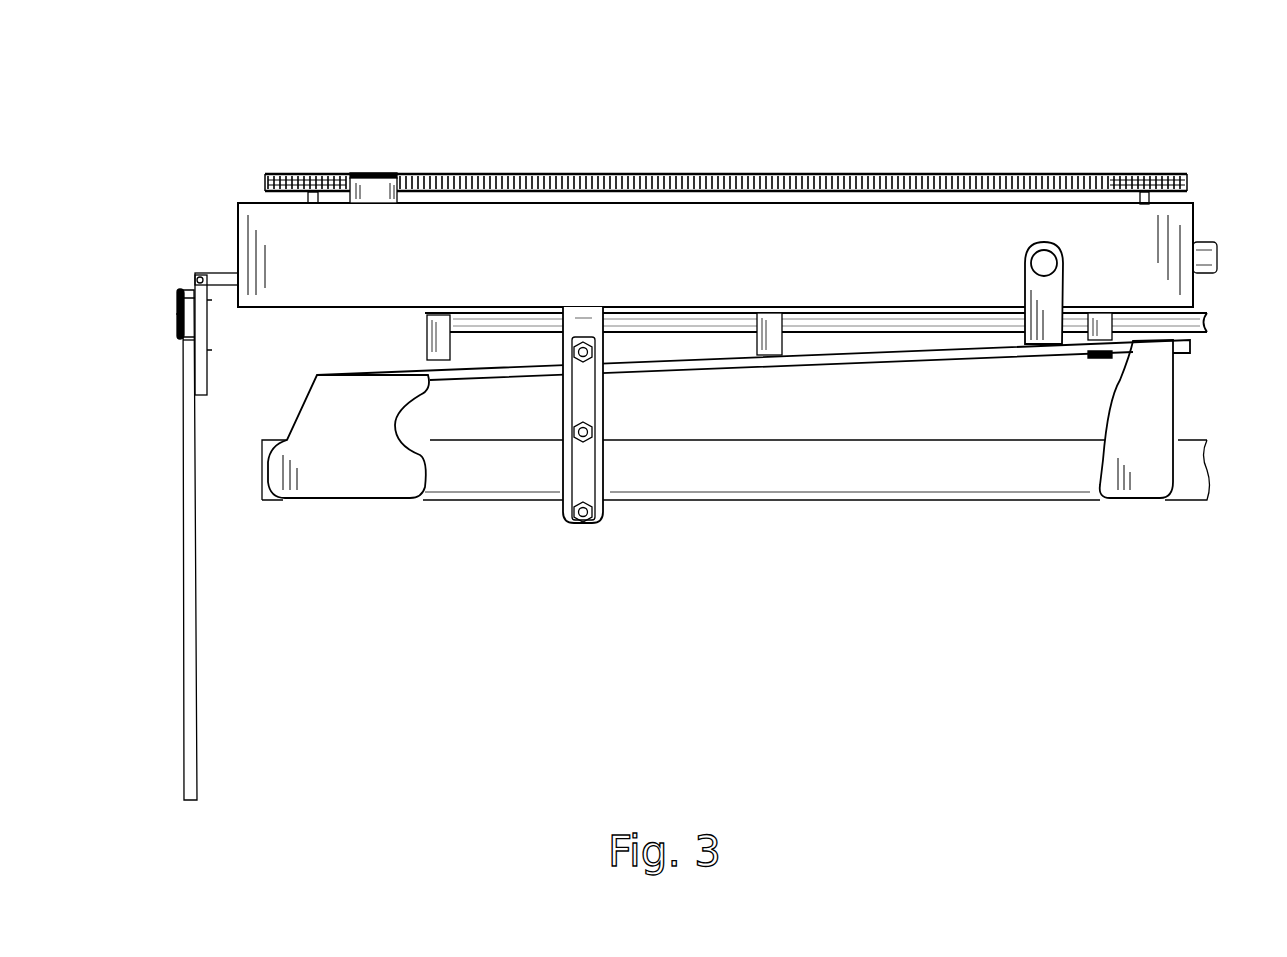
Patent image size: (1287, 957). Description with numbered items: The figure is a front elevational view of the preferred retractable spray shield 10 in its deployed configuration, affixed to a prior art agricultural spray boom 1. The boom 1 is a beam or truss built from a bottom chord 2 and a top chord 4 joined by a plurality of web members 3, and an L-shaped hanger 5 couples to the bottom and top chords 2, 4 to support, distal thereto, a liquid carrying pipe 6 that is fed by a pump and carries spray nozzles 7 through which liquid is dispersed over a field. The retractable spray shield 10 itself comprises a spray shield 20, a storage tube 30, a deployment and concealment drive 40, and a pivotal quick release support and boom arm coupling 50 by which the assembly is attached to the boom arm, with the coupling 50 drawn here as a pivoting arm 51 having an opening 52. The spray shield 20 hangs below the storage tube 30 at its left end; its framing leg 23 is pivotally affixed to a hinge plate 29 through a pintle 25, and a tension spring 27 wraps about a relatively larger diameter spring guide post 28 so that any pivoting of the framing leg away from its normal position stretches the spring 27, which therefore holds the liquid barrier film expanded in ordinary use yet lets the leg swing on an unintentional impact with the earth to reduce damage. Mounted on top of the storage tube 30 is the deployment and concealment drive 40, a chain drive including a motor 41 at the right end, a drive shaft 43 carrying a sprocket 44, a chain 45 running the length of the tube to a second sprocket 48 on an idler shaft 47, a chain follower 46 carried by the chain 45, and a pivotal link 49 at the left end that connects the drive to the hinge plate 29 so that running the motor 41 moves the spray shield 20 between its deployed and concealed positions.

The agricultural spray boom 1 is at (748, 435).
The bottom chord 2 is at (1195, 483).
The web members 3 is at (358, 458).
The top chord 4 is at (990, 354).
The L-shaped hanger 5 is at (598, 328).
The liquid carrying pipe 6 is at (845, 328).
The spray nozzles 7 is at (440, 332).
The retractable spray shield 10 is at (1165, 95).
The spray shield 20 is at (194, 533).
The framing leg 23 is at (192, 638).
The pintle 25 is at (186, 345).
The tension spring 27 is at (182, 318).
The spring guide post 28 is at (193, 297).
The hinge plate 29 is at (207, 384).
The storage tube 30 is at (609, 266).
The deployment and concealment drive 40 is at (696, 159).
The motor 41 is at (1200, 258).
The drive shaft 43 is at (1150, 197).
The sprocket 44 is at (1113, 172).
The chain 45 is at (500, 172).
The chain follower 46 is at (388, 178).
The idler shaft 47 is at (307, 198).
The sprocket 48 is at (272, 172).
The pivotal link 49 is at (228, 282).
The pivotal quick release support and boom arm coupling 50 is at (1020, 265).
The lever arm 51 is at (976, 252).
The pivot opening 52 is at (1040, 248).